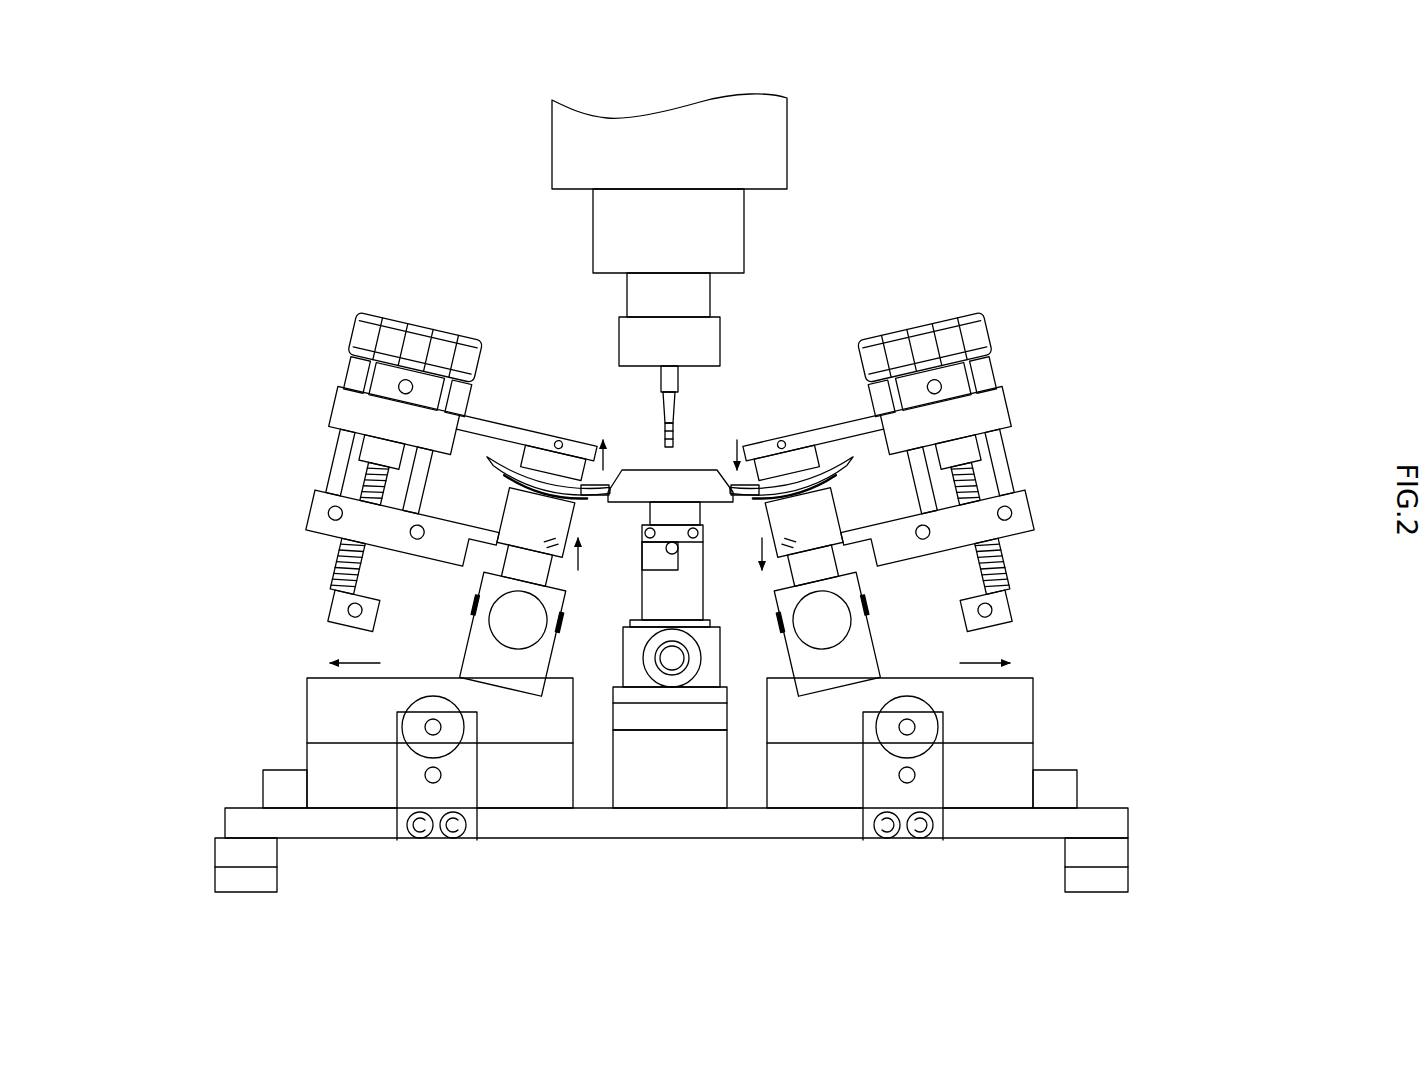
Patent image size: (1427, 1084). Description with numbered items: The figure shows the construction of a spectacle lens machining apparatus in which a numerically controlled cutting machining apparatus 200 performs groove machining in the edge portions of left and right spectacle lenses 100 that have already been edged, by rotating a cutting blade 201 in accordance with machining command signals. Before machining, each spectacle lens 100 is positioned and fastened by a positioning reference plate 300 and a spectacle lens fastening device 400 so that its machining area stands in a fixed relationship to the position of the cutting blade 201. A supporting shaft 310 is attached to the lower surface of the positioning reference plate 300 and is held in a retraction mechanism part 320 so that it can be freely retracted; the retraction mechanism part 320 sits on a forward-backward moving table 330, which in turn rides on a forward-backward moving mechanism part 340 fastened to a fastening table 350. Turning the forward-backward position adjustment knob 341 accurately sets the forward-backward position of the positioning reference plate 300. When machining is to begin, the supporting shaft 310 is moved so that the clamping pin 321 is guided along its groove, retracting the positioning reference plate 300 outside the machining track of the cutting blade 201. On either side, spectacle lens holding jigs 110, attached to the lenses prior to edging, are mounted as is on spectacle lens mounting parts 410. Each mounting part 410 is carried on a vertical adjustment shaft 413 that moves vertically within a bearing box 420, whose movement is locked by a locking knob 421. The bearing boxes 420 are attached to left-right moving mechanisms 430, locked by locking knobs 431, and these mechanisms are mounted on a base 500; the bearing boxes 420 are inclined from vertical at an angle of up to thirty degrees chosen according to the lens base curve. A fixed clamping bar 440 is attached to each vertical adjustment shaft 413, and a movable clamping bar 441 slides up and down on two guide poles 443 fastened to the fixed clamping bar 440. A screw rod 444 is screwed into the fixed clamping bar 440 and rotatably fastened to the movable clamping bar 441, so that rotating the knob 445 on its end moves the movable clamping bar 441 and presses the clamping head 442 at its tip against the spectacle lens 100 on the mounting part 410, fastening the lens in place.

The spectacle lens 100 is at (498, 456).
The spectacle lens holding jig 110 is at (584, 494).
The cutting machining apparatus 200 is at (805, 151).
The cutting blade 201 is at (663, 405).
The positioning reference plate 300 is at (698, 603).
The supporting shaft 310 is at (690, 509).
The retraction mechanism part 320 is at (671, 572).
The clamping pin 321 is at (670, 551).
The forward-backward moving table 330 is at (672, 653).
The forward-backward moving mechanism part 340 is at (738, 728).
The forward-backward position adjustment knob 341 is at (648, 655).
The fastening table 350 is at (666, 790).
The spectacle lens fastening device 400 is at (673, 606).
The spectacle lens mounting part 410 is at (516, 514).
The vertical adjustment shaft 413 is at (832, 565).
The bearing box 420 is at (488, 640).
The locking knob 421 is at (490, 652).
The left-right moving mechanism 430 is at (288, 716).
The locking knob 431 is at (450, 745).
The fixed clamping bar 440 is at (316, 501).
The movable clamping bar 441 is at (342, 410).
The clamping head 442 is at (571, 460).
The guide pole 443 is at (341, 472).
The screw rod 444 is at (350, 586).
The knob 445 is at (355, 330).
The base 500 is at (1122, 808).